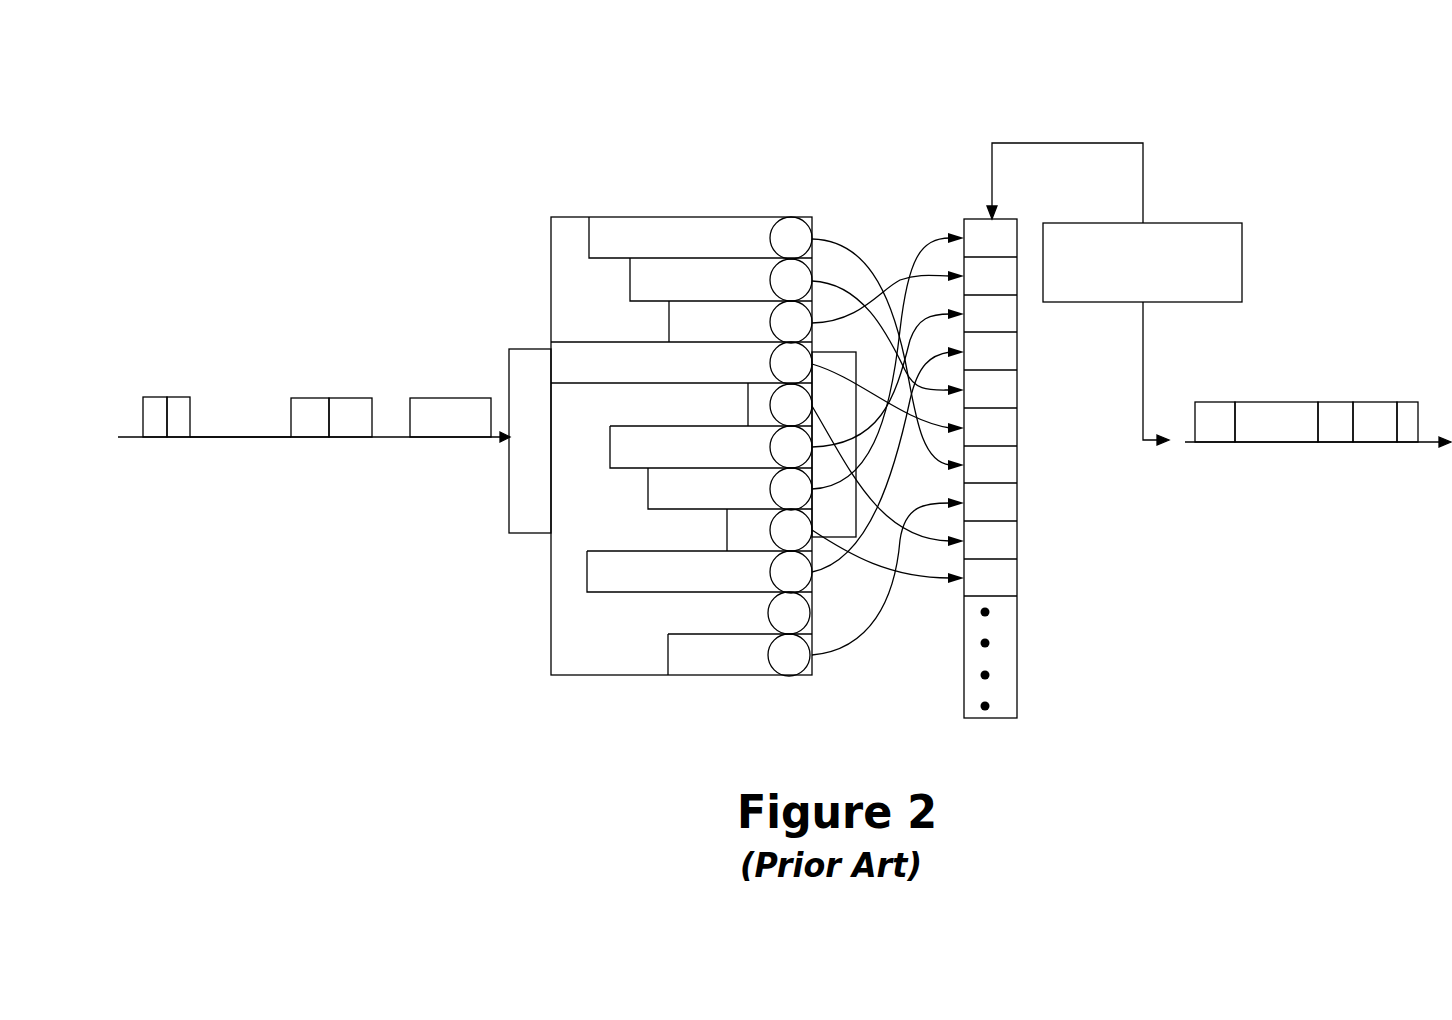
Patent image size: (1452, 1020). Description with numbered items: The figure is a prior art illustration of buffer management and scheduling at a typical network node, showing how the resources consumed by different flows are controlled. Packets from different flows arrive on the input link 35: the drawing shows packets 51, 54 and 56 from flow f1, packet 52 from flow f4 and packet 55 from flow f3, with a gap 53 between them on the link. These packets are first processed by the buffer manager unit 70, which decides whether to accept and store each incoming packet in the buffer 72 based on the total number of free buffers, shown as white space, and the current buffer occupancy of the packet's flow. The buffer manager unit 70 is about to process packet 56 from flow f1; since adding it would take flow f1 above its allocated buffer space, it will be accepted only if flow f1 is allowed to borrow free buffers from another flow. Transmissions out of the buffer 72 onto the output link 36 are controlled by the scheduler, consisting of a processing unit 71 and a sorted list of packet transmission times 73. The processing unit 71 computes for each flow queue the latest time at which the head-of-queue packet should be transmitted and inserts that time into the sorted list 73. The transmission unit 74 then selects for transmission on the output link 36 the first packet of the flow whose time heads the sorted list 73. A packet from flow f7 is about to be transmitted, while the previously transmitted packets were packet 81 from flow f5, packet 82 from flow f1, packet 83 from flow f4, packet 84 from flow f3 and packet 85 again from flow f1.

The input link 35 is at (330, 452).
The output link 36 is at (1340, 456).
The packet 51 is at (156, 396).
The packet 52 is at (180, 396).
The idle gap 53 is at (240, 436).
The packet 54 is at (318, 396).
The packet 55 is at (356, 396).
The packet 56 is at (457, 396).
The buffer manager unit 70 is at (547, 450).
The processing unit 71 is at (852, 420).
The buffer 72 is at (738, 214).
The sorted list of packet transmission times 73 is at (1018, 614).
The transmission unit 74 is at (1243, 247).
The packet 81 is at (1216, 401).
The packet 82 is at (1276, 401).
The packet 83 is at (1336, 401).
The packet 84 is at (1376, 401).
The packet 85 is at (1411, 401).